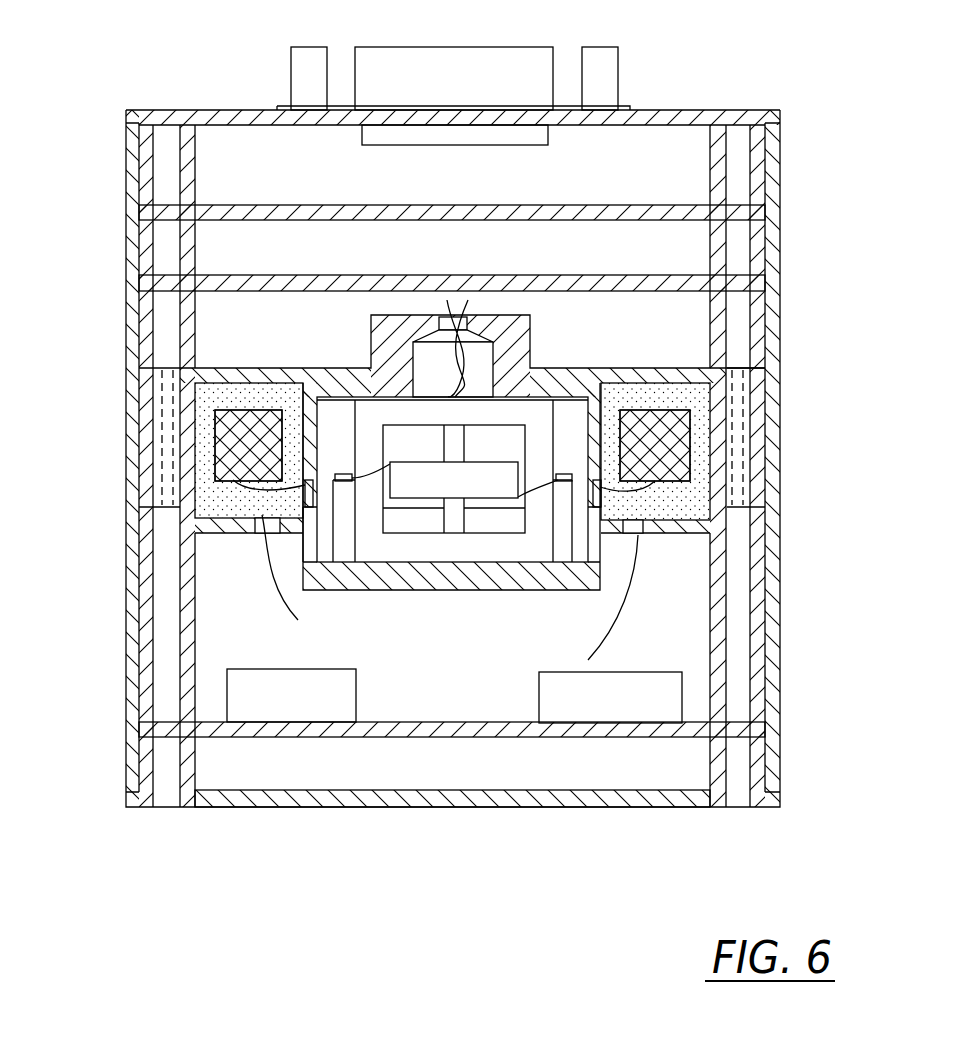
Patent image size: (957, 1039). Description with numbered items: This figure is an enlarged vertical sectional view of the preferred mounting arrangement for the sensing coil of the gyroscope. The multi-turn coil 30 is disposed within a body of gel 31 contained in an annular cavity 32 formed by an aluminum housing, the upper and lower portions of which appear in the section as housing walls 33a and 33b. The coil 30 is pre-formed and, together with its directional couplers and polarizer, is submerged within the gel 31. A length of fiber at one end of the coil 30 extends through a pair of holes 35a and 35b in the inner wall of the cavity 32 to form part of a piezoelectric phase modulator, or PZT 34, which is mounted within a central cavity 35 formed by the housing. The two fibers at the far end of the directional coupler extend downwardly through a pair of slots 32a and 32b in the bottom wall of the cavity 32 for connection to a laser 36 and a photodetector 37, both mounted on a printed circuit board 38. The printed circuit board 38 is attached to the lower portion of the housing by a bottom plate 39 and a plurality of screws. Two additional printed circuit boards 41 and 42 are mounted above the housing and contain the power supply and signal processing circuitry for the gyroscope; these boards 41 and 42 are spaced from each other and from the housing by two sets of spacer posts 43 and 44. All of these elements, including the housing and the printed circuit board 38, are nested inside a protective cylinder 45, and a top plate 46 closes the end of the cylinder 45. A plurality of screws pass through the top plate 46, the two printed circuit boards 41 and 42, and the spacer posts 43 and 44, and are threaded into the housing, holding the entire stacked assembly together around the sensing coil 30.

The multi-turn coil 30 is at (253, 410).
The body of gel 31 is at (657, 397).
The annular cavity 32 is at (208, 430).
The slot 32a is at (263, 533).
The slot 32b is at (642, 535).
The upper housing wall 33a is at (758, 422).
The lower housing wall 33b is at (758, 578).
The piezoelectric phase modulator 34 is at (435, 457).
The central cavity 35 is at (570, 548).
The hole 35a is at (343, 474).
The hole 35b is at (565, 474).
The laser 36 is at (336, 669).
The photodetector 37 is at (655, 672).
The printed circuit board 38 is at (426, 738).
The bottom plate 39 is at (355, 808).
The printed circuit board 41 is at (600, 275).
The printed circuit board 42 is at (590, 205).
The spacer posts 43 is at (197, 347).
The spacer posts 44 is at (197, 235).
The protective cylinder 45 is at (137, 312).
The top plate 46 is at (680, 110).